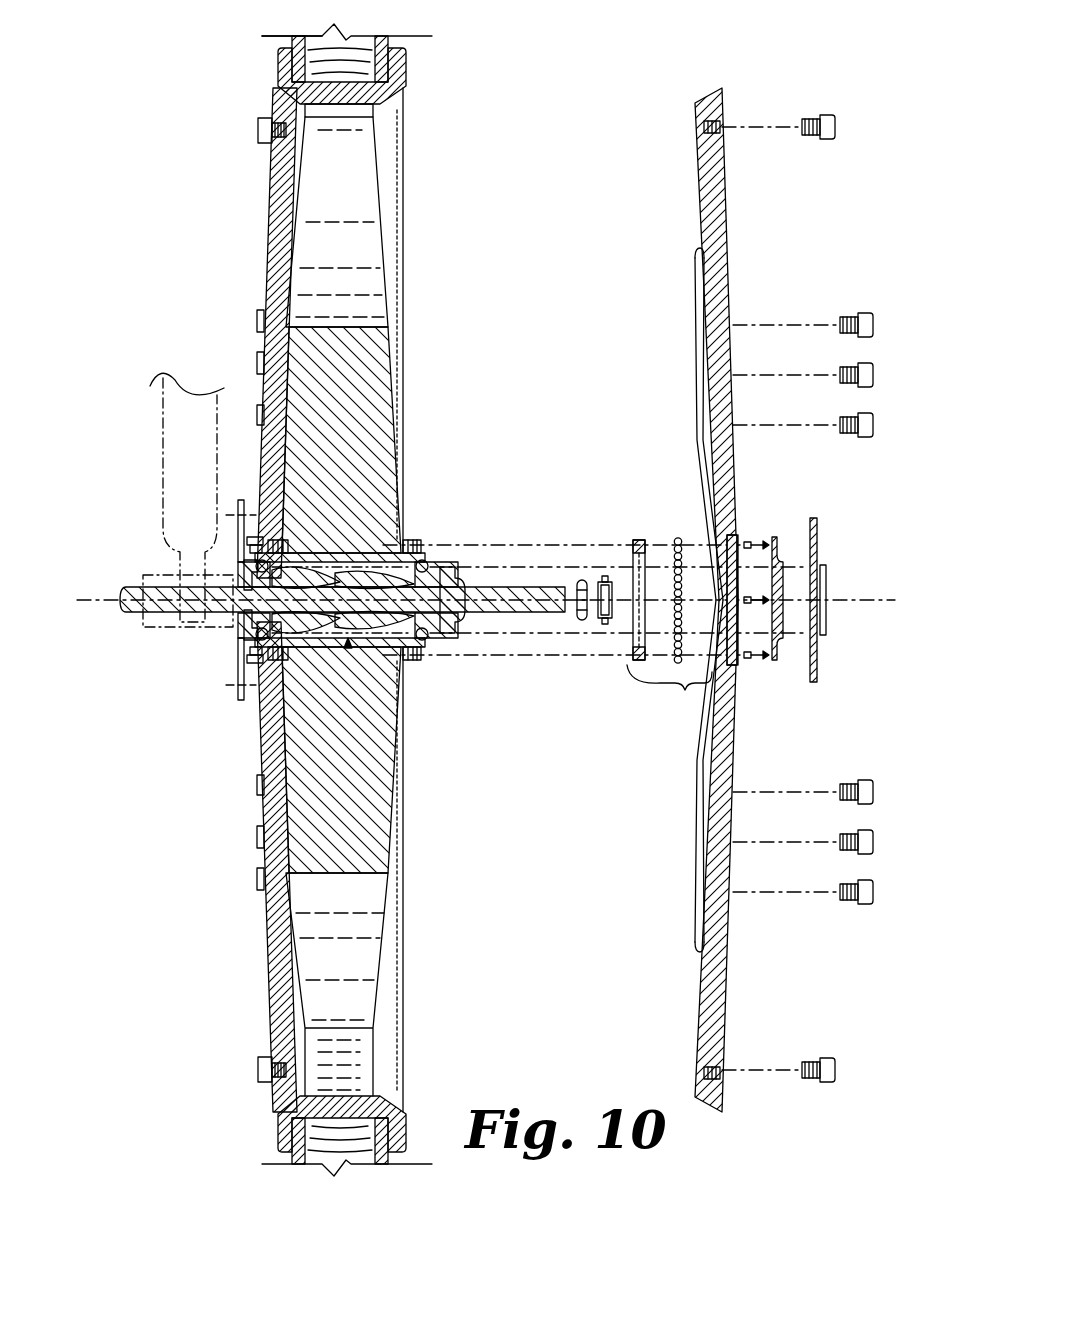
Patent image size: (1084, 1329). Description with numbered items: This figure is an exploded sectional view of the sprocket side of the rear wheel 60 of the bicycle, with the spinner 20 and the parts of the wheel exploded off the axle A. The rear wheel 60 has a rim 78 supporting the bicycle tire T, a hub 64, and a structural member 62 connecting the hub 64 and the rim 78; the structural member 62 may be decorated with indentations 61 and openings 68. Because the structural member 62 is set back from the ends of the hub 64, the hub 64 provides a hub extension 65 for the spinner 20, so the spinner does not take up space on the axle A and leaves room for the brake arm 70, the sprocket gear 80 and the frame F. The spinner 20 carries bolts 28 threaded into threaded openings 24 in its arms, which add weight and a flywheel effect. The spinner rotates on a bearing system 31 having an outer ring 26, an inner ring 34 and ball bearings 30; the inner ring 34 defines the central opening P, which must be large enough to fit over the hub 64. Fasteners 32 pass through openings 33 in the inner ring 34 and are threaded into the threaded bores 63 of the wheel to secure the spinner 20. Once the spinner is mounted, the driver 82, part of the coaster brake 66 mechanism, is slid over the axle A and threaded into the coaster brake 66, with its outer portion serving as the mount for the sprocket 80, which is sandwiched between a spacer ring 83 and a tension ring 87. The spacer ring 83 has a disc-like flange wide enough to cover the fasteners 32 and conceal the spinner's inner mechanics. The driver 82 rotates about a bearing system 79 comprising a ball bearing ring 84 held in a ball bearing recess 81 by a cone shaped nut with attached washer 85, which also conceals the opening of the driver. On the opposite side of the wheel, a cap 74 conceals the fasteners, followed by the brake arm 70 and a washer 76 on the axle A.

The spinner 20 is at (733, 90).
The threaded openings 24 is at (722, 132).
The outer ring 26 is at (728, 535).
The bolts 28 is at (835, 126).
The ball bearings 30 is at (679, 538).
The bearing system 31 is at (669, 685).
The fasteners 32 is at (762, 658).
The openings 33 is at (638, 540).
The inner ring 34 is at (643, 540).
The rear wheel 60 is at (457, 125).
The indentations 61 is at (395, 480).
The structural member 62 is at (358, 358).
The threaded bores 63 is at (422, 657).
The hub 64 is at (430, 558).
The hub extension 65 is at (410, 553).
The coaster brake 66 is at (414, 655).
The openings 68 is at (367, 212).
The brake arm 70 is at (225, 628).
The cap 74 is at (247, 653).
The washer 76 is at (200, 628).
The rim 78 is at (398, 70).
The bearing system 79 is at (438, 628).
The sprocket gear 80 is at (815, 520).
The ball bearing recess 81 is at (455, 582).
The driver 82 is at (440, 642).
The spacer ring 83 is at (774, 660).
The ball bearing ring 84 is at (577, 580).
The cone shaped nut with attached washer 85 is at (610, 580).
The tension ring 87 is at (826, 565).
The bicycle tire T is at (282, 60).
The axle A is at (118, 612).
The frame F is at (188, 468).
The central opening P is at (742, 578).